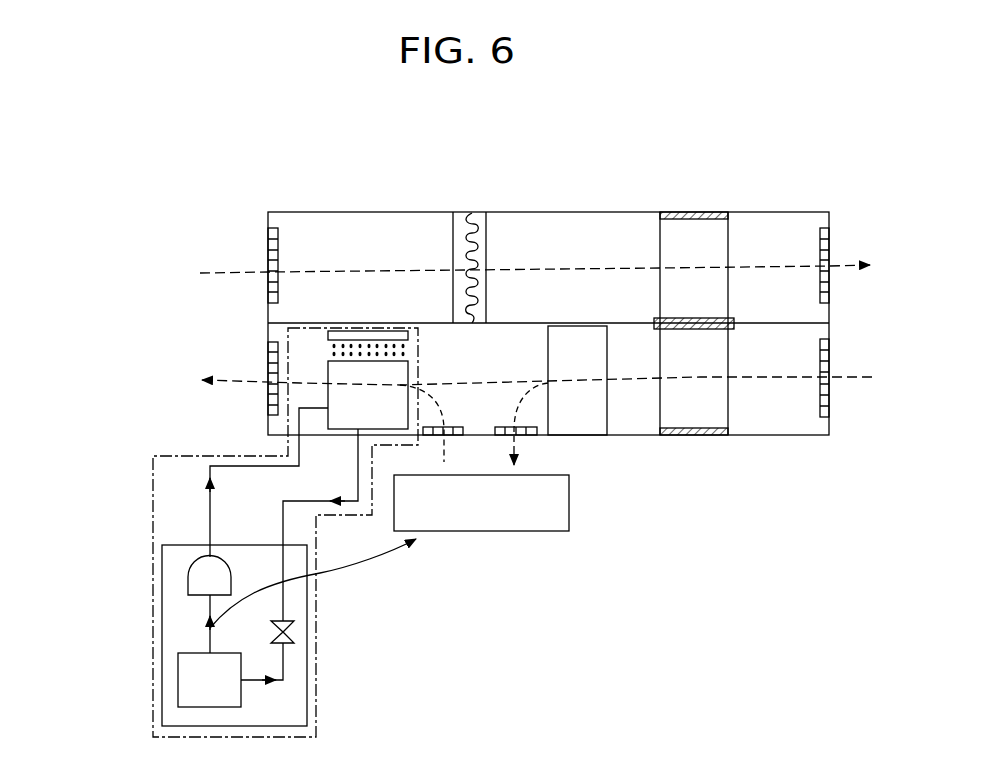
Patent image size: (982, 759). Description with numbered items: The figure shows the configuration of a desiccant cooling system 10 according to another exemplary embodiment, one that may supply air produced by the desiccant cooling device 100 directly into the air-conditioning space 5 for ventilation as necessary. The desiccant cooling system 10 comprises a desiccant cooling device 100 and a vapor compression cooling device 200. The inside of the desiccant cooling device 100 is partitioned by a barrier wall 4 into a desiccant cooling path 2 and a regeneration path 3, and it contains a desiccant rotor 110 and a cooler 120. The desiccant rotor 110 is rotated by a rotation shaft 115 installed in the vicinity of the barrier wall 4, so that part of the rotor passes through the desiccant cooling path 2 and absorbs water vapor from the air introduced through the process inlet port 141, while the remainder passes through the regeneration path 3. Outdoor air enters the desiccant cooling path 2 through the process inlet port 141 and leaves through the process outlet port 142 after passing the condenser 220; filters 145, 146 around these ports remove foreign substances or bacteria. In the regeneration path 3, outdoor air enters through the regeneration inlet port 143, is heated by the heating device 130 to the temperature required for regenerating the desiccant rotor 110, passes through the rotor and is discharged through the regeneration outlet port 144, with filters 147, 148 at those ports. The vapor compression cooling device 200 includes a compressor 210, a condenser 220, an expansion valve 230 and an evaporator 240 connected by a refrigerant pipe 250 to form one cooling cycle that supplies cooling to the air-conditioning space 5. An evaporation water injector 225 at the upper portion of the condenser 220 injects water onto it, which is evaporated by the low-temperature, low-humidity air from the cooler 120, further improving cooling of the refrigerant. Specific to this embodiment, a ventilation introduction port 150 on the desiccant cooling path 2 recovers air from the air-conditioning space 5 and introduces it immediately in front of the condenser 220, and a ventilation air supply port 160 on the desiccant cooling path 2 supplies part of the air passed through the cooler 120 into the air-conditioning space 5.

The desiccant cooling system 10 is at (46, 369).
The desiccant cooling device 100 is at (160, 368).
The vapor compression cooling device 200 is at (145, 538).
The desiccant cooling path 2 is at (764, 410).
The regeneration path 3 is at (770, 228).
The barrier wall 4 is at (793, 323).
The air-conditioning space 5 is at (519, 531).
The desiccant rotor 110 is at (690, 212).
The rotation shaft 115 is at (655, 320).
The cooler 120 is at (602, 425).
The heating device 130 is at (469, 213).
The process inlet port 141 is at (870, 399).
The process outlet port 142 is at (226, 392).
The regeneration inlet port 143 is at (229, 246).
The regeneration outlet port 144 is at (868, 244).
The filter 145 is at (825, 405).
The filter 146 is at (268, 395).
The filter 147 is at (268, 237).
The filter 148 is at (829, 238).
The ventilation introduction port 150 is at (453, 435).
The ventilation air supply port 160 is at (527, 435).
The compressor 210 is at (188, 580).
The condenser 220 is at (388, 421).
The evaporation water injector 225 is at (327, 335).
The expansion valve 230 is at (298, 634).
The evaporator 240 is at (178, 680).
The refrigerant pipe 250 is at (283, 530).